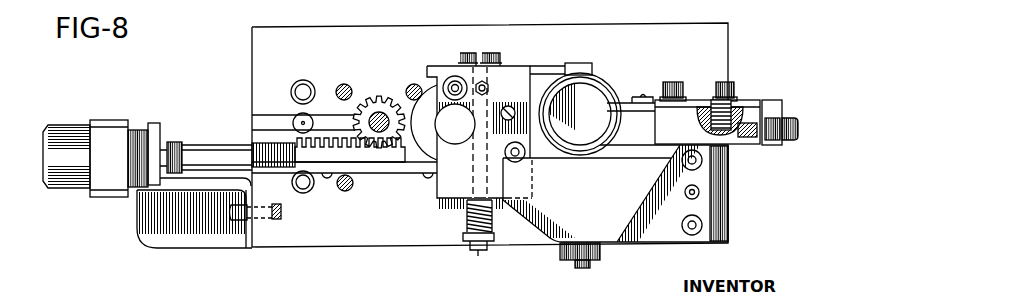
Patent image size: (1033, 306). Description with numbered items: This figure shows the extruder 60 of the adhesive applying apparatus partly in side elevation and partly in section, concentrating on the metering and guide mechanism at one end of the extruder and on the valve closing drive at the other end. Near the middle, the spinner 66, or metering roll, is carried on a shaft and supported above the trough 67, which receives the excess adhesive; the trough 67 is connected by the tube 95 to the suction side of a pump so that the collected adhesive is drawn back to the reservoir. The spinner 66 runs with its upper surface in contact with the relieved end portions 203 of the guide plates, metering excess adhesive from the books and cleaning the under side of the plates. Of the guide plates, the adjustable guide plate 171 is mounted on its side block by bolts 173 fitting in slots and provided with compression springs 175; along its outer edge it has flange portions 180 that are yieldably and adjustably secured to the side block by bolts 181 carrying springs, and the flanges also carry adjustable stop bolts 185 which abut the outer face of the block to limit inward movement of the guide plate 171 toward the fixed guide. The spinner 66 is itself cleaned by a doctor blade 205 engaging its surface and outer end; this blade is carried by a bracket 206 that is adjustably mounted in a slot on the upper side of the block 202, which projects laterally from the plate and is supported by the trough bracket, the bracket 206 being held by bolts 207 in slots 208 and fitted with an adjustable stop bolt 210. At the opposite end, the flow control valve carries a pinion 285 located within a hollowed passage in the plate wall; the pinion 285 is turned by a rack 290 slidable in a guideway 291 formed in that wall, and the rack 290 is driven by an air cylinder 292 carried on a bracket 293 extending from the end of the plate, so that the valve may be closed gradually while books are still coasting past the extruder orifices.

The extruder 60 is at (243, 72).
The spinner 66 is at (586, 150).
The trough 67 is at (613, 228).
The tube 95 is at (570, 265).
The guide plate 171 is at (554, 65).
The bolts 173 is at (491, 52).
The compression springs 175 is at (465, 218).
The flange portions 180 is at (512, 70).
The bolts 181 is at (452, 77).
The adjustable stop bolts 185 is at (481, 80).
The block 202 is at (733, 143).
The relieved end portions 203 is at (583, 66).
The doctor blade 205 is at (622, 118).
The bracket 206 is at (773, 105).
The bolts 207 is at (725, 83).
The slots 208 is at (737, 105).
The adjustable stop bolt 210 is at (792, 140).
The pinion 285 is at (379, 98).
The rack 290 is at (262, 116).
The guideway 291 is at (256, 130).
The air cylinder 292 is at (57, 128).
The bracket 293 is at (176, 240).